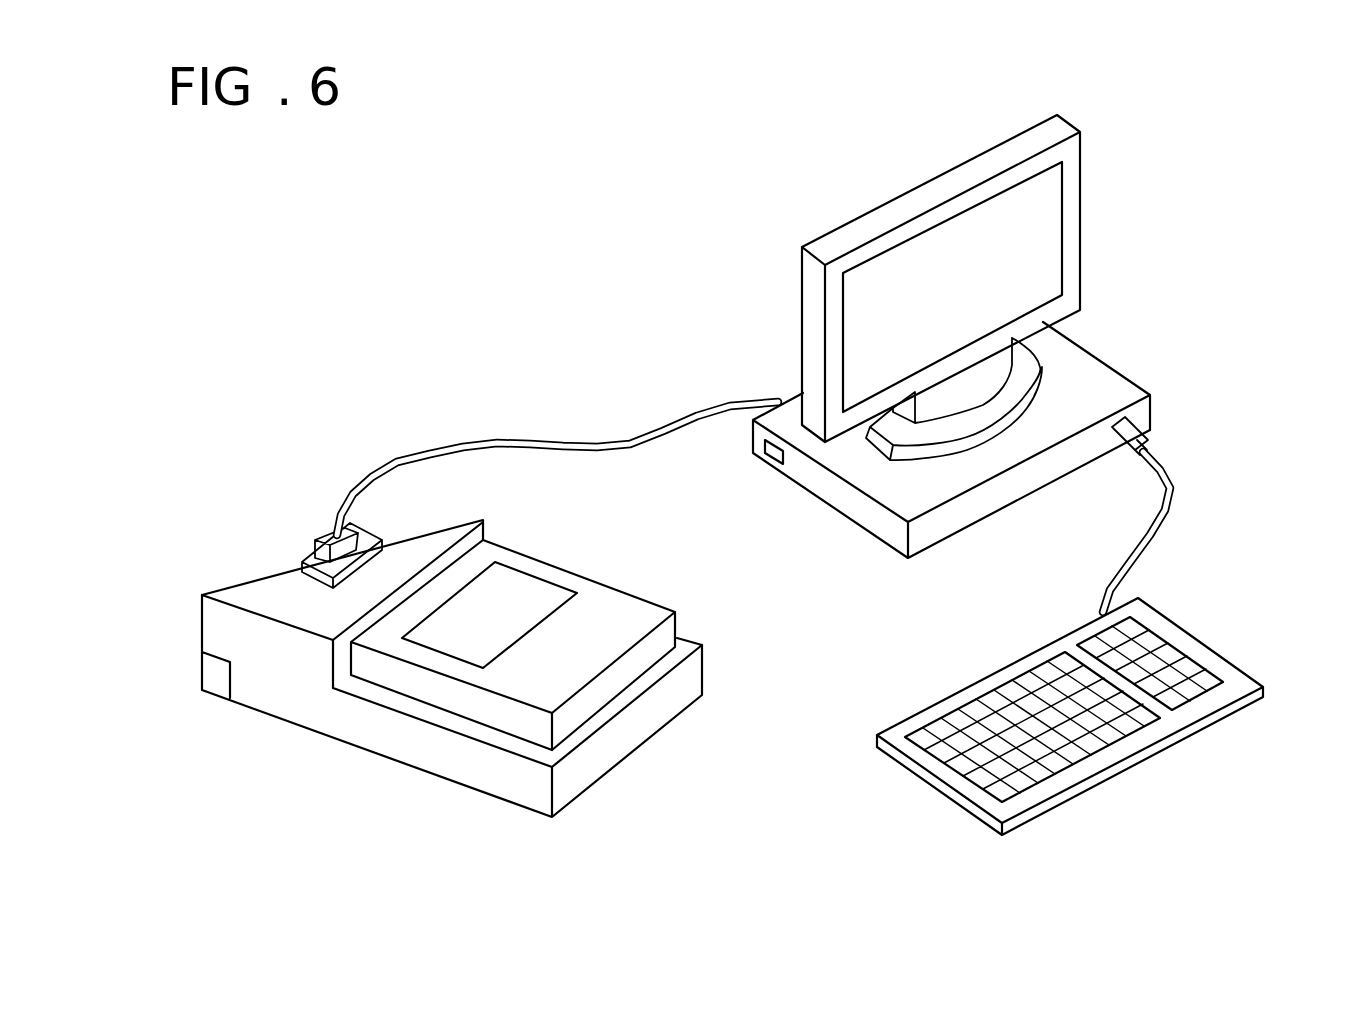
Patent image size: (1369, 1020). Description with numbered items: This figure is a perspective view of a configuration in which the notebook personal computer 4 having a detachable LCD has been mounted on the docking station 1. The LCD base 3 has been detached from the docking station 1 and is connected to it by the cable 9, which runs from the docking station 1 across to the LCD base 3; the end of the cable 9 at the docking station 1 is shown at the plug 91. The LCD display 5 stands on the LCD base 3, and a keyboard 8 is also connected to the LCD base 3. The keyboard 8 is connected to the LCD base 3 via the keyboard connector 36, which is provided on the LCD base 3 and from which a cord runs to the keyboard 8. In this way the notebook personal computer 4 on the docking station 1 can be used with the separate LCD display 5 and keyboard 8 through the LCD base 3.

The docking station 1 is at (705, 668).
The notebook personal computer 4 is at (455, 699).
The connector 91 is at (328, 538).
The cable 9 is at (557, 438).
The LCD base 3 is at (1127, 377).
The LCD display 5 is at (1082, 245).
The keyboard connector 36 is at (1142, 413).
The keyboard 8 is at (1198, 637).